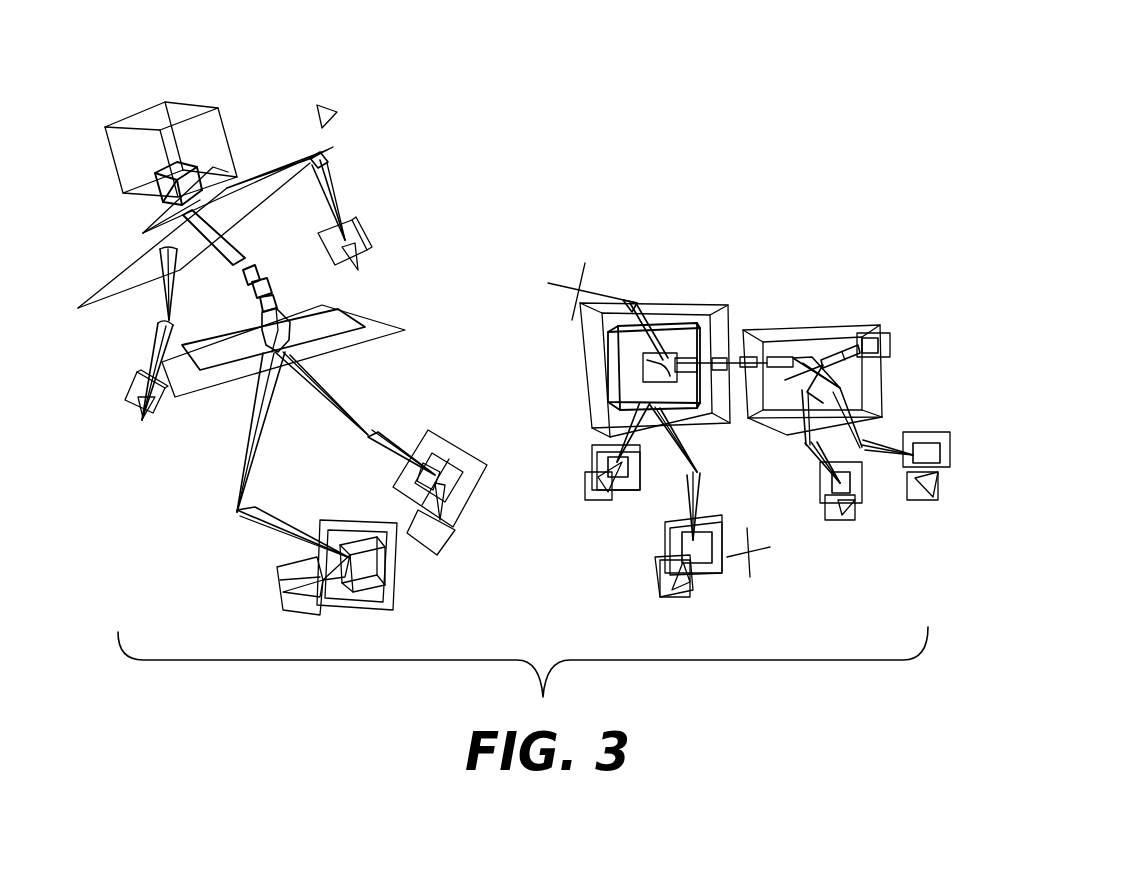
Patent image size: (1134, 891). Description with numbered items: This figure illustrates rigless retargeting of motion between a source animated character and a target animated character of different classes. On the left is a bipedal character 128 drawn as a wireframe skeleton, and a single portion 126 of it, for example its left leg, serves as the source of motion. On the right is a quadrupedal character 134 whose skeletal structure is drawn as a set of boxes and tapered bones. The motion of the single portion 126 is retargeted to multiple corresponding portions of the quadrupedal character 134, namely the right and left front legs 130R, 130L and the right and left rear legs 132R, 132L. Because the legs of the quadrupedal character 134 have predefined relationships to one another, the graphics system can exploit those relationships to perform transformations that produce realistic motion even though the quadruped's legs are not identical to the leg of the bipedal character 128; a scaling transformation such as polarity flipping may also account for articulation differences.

The bipedal character 128 is at (286, 98).
The single portion 126 is at (247, 445).
The quadrupedal character 134 is at (711, 265).
The left front leg 130L is at (648, 443).
The right front leg 130R is at (707, 503).
The left rear leg 132L is at (880, 442).
The right rear leg 132R is at (807, 458).